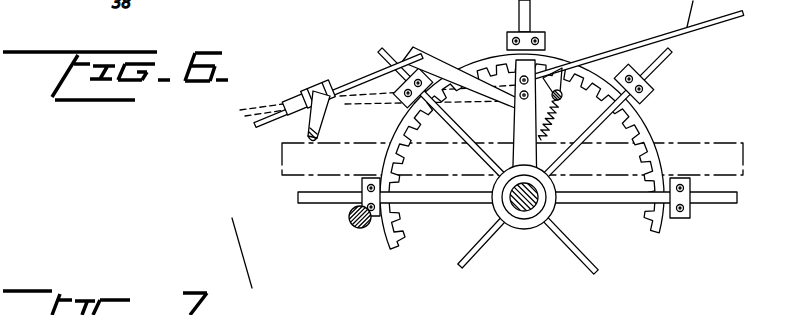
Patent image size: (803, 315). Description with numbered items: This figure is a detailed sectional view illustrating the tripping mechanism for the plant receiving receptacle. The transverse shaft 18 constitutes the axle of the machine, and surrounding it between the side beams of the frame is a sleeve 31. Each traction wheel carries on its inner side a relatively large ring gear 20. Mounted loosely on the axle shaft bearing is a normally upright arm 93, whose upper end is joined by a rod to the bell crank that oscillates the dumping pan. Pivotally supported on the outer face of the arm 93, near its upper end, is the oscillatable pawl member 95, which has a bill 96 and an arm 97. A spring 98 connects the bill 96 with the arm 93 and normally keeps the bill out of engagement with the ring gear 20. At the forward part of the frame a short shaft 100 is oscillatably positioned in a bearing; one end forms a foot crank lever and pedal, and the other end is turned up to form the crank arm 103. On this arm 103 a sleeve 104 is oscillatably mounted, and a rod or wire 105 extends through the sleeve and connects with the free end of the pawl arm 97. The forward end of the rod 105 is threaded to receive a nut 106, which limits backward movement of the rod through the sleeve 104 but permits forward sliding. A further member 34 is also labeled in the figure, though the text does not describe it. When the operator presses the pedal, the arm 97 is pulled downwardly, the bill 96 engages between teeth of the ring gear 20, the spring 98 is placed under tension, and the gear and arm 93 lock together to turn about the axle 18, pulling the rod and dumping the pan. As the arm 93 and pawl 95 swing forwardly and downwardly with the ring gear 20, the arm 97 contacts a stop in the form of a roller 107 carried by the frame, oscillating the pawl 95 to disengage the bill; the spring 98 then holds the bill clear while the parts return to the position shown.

The shaft 18 is at (525, 218).
The ring gear 20 is at (662, 128).
The sleeve 31 is at (533, 210).
The rod 34 is at (338, 63).
The upright arm 93 is at (517, 128).
The pawl member 95 is at (495, 78).
The bill 96 is at (592, 67).
The pawl arm 97 is at (440, 66).
The spring 98 is at (562, 115).
The short shaft 100 is at (300, 147).
The crank arm 103 is at (305, 133).
The sleeve 104 is at (330, 88).
The rod or wire 105 is at (353, 77).
The nut 106 is at (297, 95).
The roller 107 is at (362, 230).